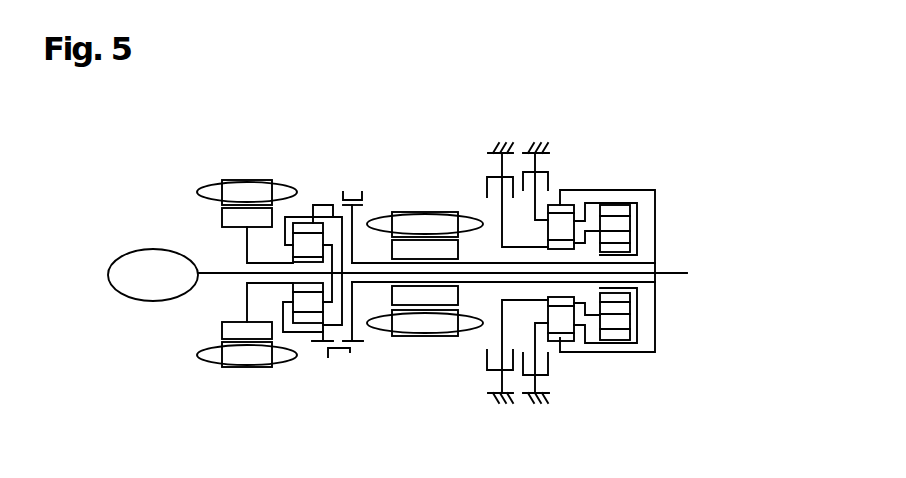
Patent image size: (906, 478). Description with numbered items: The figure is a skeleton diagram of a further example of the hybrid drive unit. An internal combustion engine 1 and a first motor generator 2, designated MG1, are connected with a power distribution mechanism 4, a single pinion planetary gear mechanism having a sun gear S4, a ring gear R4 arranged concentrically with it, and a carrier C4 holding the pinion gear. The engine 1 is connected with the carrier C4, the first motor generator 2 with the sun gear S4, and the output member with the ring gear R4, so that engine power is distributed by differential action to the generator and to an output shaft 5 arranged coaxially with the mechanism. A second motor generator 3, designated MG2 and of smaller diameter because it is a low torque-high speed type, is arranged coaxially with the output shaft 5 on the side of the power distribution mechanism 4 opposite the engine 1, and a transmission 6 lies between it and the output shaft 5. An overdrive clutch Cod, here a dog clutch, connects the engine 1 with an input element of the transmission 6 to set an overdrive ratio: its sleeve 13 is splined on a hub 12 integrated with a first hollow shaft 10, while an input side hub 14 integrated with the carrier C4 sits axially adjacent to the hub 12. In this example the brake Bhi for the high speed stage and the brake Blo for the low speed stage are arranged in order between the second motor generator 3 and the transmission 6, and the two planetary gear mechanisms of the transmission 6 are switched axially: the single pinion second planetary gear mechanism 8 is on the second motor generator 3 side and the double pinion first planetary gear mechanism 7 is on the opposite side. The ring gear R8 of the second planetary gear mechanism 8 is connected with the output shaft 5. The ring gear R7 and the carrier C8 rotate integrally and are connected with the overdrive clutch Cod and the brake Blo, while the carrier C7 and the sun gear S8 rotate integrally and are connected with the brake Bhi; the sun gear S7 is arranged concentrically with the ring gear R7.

The internal combustion engine 1 is at (155, 251).
The first motor generator 2 is at (218, 182).
The first motor generator MG1 is at (247, 263).
The second motor generator 3 is at (385, 212).
The second motor generator MG2 is at (425, 263).
The power distribution mechanism 4 is at (295, 372).
The ring gear R4 is at (300, 220).
The carrier C4 is at (285, 245).
The sun gear S4 is at (293, 285).
The overdrive clutch Cod is at (336, 158).
The first hollow shaft 10 is at (378, 255).
The hub 12 is at (363, 341).
The sleeve 13 is at (350, 352).
The input side hub 14 is at (318, 343).
The brake Bhi is at (517, 262).
The brake Blo is at (540, 262).
The transmission 6 is at (666, 168).
The first planetary gear mechanism 7 is at (628, 364).
The second planetary gear mechanism 8 is at (571, 174).
The ring gear R8 is at (570, 205).
The sun gear S8 is at (548, 243).
The carrier C8 is at (583, 326).
The ring gear R7 is at (632, 207).
The carrier C7 is at (597, 228).
The sun gear S7 is at (632, 247).
The output shaft 5 is at (685, 272).